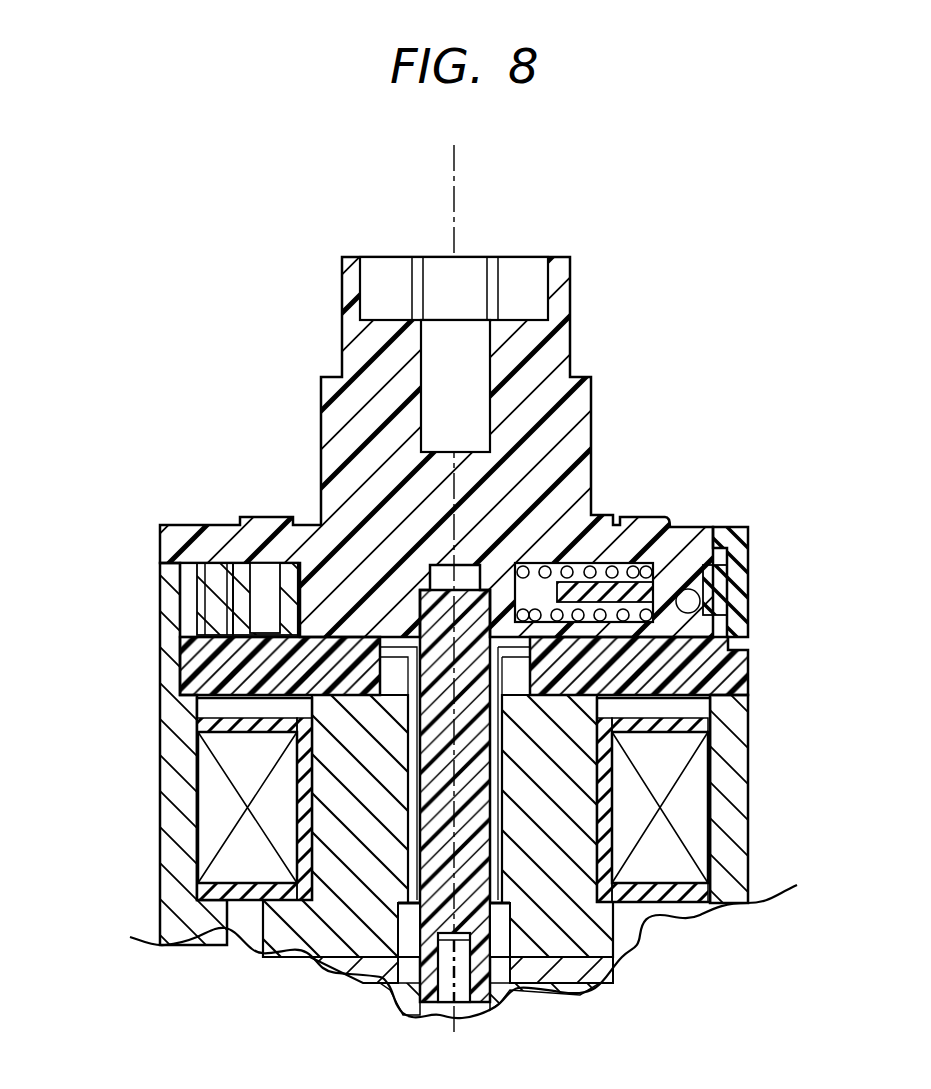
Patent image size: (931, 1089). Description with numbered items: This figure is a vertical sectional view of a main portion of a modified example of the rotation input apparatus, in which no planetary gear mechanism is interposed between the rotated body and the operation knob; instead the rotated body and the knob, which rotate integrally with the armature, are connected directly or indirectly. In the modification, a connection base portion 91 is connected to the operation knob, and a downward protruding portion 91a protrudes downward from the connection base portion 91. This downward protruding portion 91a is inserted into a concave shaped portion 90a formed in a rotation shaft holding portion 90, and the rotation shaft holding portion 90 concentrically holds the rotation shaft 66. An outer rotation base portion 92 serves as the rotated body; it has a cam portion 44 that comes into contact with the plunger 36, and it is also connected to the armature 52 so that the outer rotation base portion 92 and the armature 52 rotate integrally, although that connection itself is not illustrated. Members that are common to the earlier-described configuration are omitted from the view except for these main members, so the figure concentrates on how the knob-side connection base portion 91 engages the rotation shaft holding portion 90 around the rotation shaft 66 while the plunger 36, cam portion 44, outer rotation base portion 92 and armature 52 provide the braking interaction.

The connection base portion 91 is at (328, 425).
The downward protruding portion 91a is at (288, 580).
The rotation shaft holding portion 90 is at (217, 597).
The concave shaped portion 90a is at (240, 567).
The plunger 36 is at (667, 578).
The cam portion 44 is at (703, 603).
The outer rotation base portion 92 is at (172, 607).
The armature 52 is at (735, 675).
The rotation shaft 66 is at (473, 807).